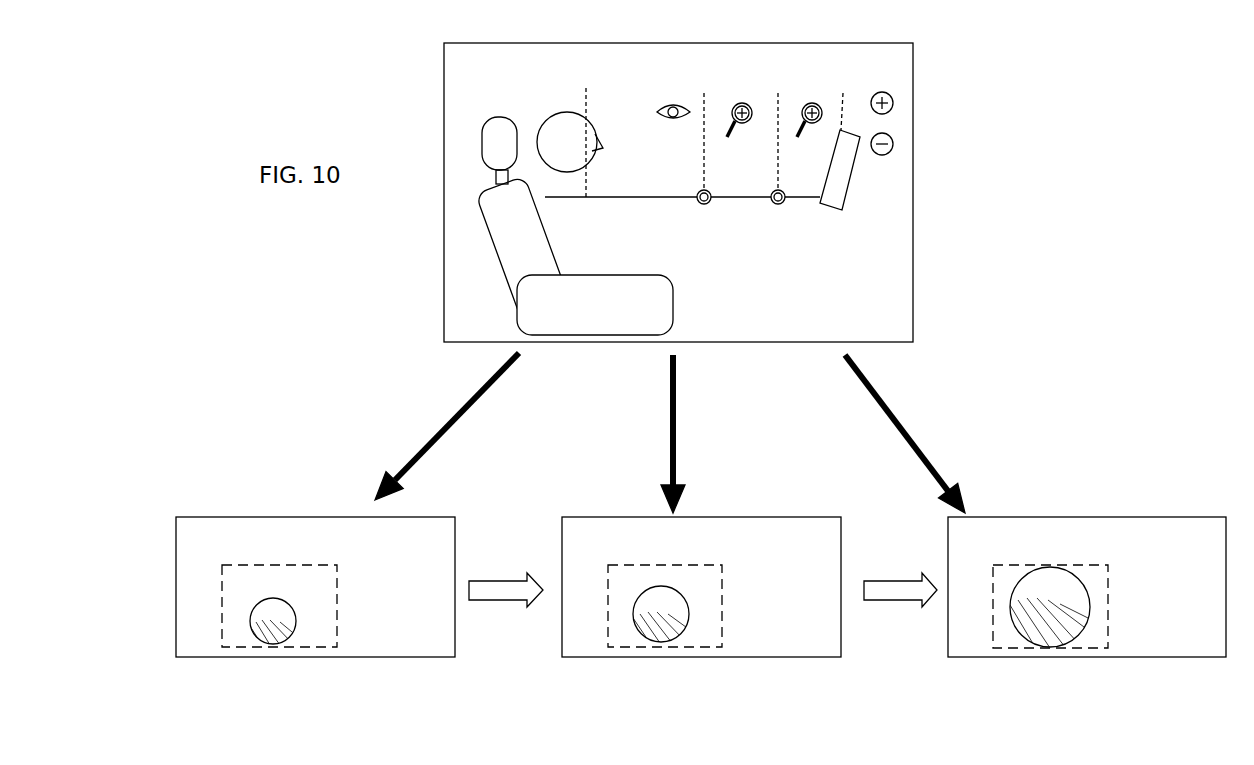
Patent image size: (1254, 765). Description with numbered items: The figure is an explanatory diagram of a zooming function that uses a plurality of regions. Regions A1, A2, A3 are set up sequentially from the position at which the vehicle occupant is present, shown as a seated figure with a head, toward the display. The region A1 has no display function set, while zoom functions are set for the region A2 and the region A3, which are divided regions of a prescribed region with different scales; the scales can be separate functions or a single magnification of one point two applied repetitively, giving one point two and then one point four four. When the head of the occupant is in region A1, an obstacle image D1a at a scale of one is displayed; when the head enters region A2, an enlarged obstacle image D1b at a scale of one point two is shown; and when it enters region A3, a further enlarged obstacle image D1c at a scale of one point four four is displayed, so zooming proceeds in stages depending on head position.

The region A1 is at (514, 330).
The region A2 is at (691, 336).
The region A3 is at (878, 336).
The obstacle image D1a is at (294, 627).
The obstacle image D1b is at (688, 622).
The obstacle image D1c is at (1087, 620).